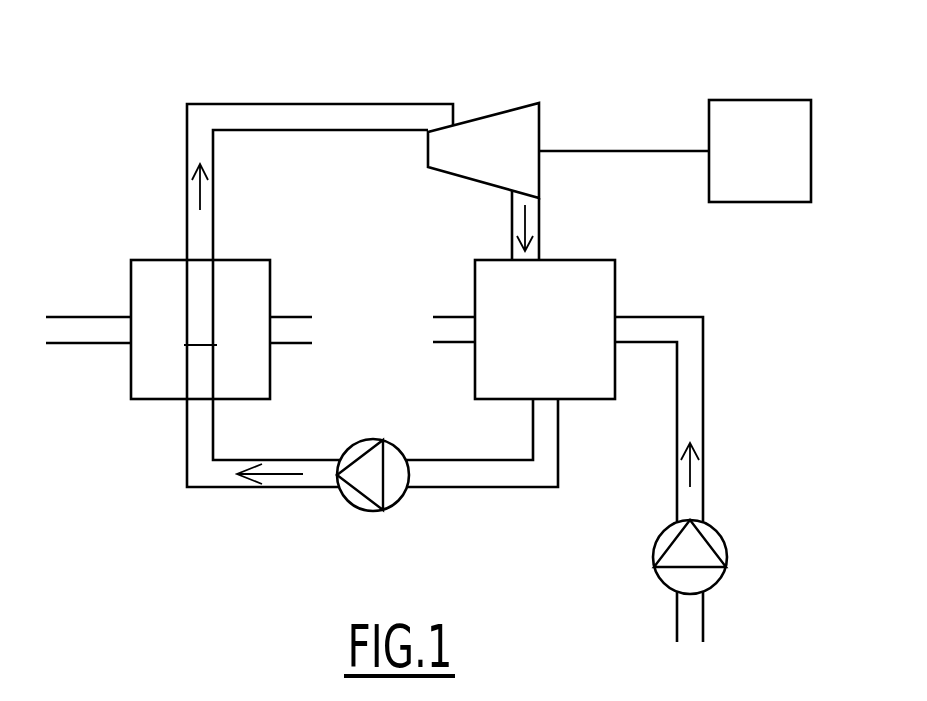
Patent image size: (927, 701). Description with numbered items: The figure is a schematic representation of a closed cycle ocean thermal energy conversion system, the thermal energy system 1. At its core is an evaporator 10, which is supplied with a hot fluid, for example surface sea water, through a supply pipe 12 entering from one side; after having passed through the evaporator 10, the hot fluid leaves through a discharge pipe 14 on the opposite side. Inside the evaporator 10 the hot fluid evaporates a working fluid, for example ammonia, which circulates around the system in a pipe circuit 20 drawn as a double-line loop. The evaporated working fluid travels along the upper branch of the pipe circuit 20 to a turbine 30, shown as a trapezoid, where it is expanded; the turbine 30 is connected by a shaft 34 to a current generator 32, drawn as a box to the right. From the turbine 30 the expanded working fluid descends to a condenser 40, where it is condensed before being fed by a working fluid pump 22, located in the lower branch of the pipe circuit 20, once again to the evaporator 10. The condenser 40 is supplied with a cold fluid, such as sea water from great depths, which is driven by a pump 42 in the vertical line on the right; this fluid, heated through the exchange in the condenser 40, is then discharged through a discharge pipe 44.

The thermal energy system 1 is at (114, 104).
The evaporator 10 is at (200, 329).
The supply pipe 12 is at (83, 332).
The discharge pipe 14 is at (288, 327).
The pipe circuit 20 is at (293, 120).
The working fluid pump 22 is at (367, 480).
The turbine 30 is at (497, 135).
The current generator 32 is at (768, 120).
The shaft 34 is at (632, 148).
The condenser 40 is at (595, 294).
The pump 42 is at (710, 543).
The discharge pipe 44 is at (457, 330).